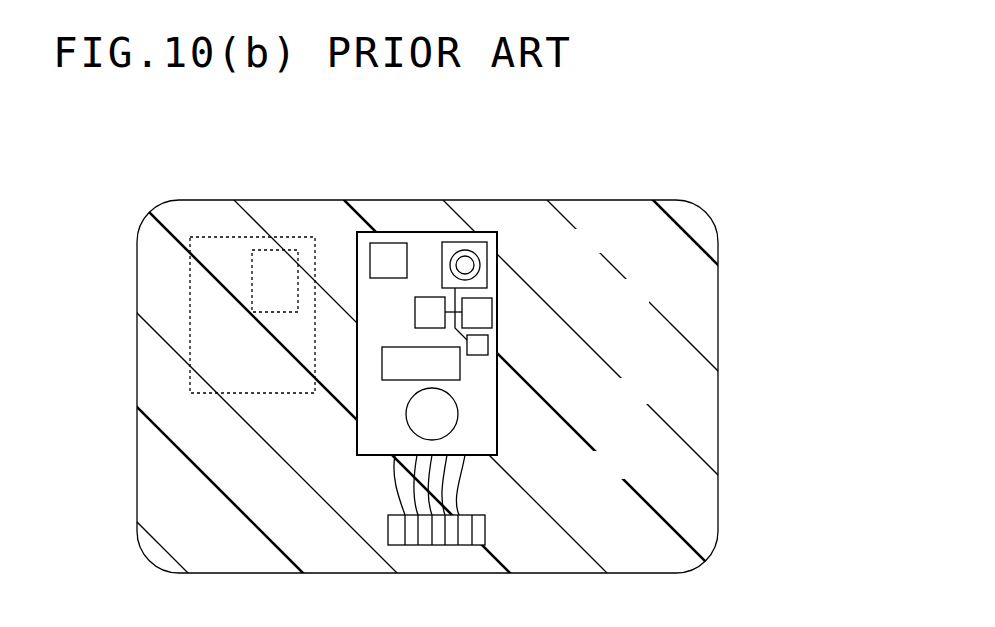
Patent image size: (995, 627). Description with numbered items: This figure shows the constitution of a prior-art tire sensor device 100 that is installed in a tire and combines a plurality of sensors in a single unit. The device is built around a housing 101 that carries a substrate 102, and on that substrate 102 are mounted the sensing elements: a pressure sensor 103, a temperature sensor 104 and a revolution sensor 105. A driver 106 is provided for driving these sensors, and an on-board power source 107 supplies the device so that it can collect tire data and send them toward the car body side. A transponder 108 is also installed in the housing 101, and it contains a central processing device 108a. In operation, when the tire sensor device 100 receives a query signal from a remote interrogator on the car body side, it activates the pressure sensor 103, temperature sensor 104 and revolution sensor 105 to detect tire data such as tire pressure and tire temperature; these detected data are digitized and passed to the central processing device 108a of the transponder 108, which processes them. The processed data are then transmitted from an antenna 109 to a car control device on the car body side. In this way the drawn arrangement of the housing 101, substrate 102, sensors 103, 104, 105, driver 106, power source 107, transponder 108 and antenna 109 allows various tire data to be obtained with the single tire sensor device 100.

The tire sensor device 100 is at (736, 243).
The housing 101 is at (297, 200).
The substrate 102 is at (500, 247).
The pressure sensor 103 is at (466, 262).
The temperature sensor 104 is at (477, 313).
The revolution sensor 105 is at (472, 348).
The driver 106 is at (428, 310).
The on-board power source 107 is at (458, 423).
The transponder 108 is at (220, 253).
The central processing device 108a is at (278, 260).
The antenna 109 is at (448, 367).